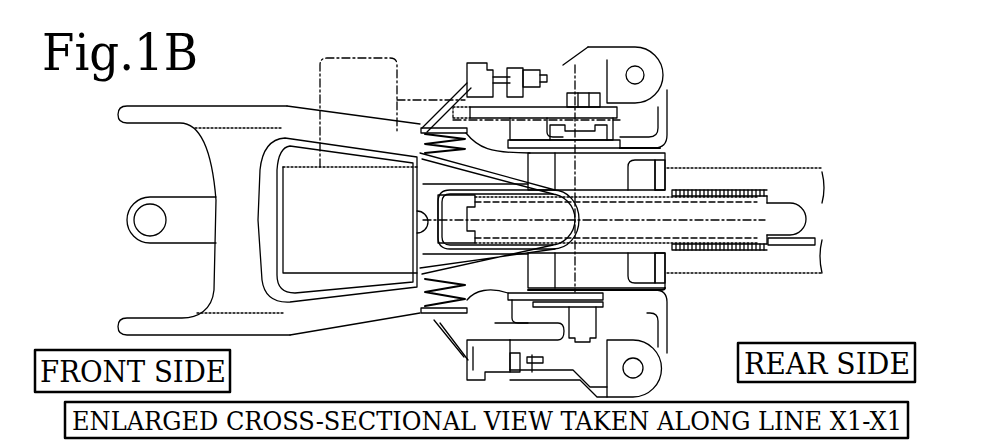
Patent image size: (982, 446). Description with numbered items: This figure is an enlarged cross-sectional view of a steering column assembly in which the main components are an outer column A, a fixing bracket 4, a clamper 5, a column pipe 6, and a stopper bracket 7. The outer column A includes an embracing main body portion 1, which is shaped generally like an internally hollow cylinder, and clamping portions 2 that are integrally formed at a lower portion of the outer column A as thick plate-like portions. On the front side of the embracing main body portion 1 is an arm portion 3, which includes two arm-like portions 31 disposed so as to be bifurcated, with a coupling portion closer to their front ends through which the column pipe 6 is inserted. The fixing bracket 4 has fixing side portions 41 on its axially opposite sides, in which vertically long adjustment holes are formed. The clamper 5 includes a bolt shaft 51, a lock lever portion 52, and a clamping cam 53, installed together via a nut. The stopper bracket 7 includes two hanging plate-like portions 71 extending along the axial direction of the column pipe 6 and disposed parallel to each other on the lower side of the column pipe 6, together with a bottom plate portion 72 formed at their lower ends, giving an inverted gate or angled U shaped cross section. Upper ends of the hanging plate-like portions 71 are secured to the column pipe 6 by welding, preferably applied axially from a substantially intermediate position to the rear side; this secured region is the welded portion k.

The embracing main body portion 1 is at (672, 157).
The clamping portion 2 is at (618, 148).
The arm portion 3 is at (388, 120).
The fixing bracket 4 is at (668, 92).
The clamper 5 is at (498, 104).
The column pipe 6 is at (786, 168).
The stopper bracket 7 is at (778, 250).
The arm-like portion 31 is at (336, 128).
The fixing side portion 41 is at (560, 123).
The bolt shaft 51 is at (590, 213).
The lock lever portion 52 is at (356, 58).
The clamping cam 53 is at (567, 120).
The hanging plate-like portion 71 is at (647, 192).
The bottom plate portion 72 is at (703, 225).
The welded portion k is at (752, 190).
The outer column A is at (262, 104).